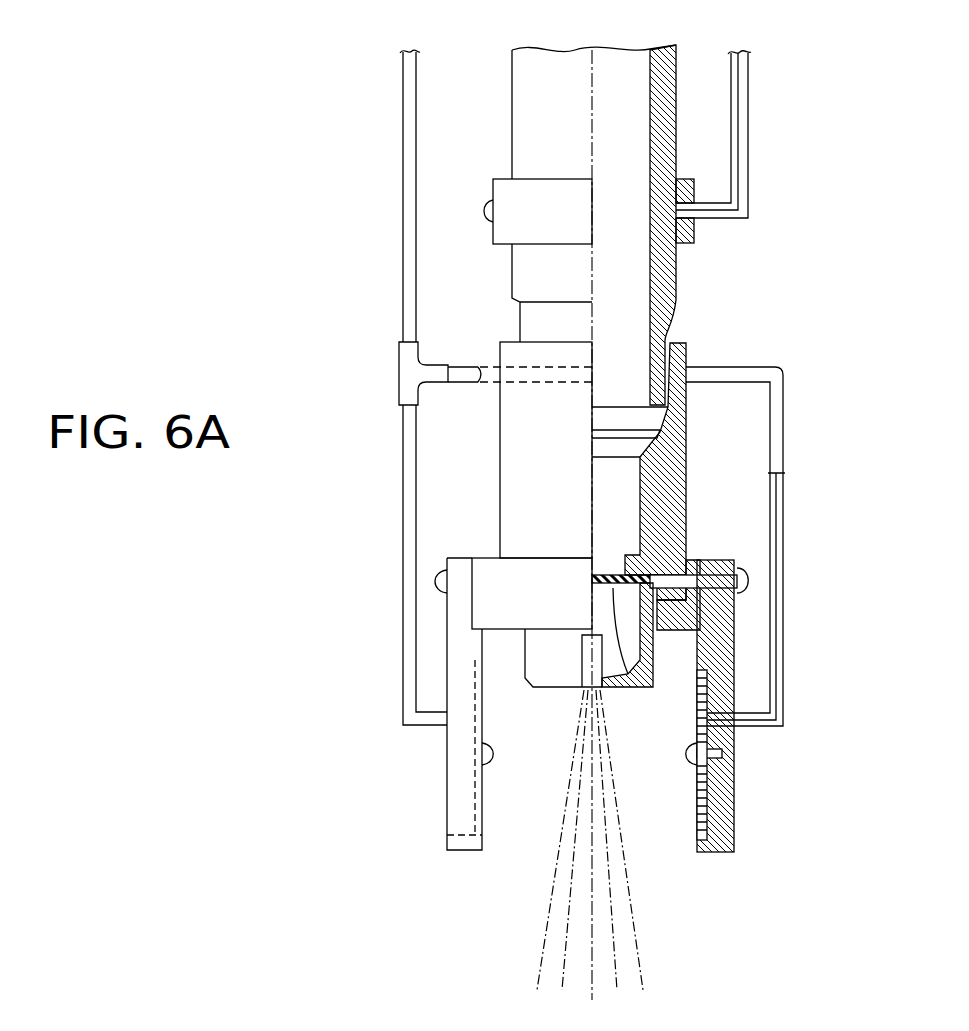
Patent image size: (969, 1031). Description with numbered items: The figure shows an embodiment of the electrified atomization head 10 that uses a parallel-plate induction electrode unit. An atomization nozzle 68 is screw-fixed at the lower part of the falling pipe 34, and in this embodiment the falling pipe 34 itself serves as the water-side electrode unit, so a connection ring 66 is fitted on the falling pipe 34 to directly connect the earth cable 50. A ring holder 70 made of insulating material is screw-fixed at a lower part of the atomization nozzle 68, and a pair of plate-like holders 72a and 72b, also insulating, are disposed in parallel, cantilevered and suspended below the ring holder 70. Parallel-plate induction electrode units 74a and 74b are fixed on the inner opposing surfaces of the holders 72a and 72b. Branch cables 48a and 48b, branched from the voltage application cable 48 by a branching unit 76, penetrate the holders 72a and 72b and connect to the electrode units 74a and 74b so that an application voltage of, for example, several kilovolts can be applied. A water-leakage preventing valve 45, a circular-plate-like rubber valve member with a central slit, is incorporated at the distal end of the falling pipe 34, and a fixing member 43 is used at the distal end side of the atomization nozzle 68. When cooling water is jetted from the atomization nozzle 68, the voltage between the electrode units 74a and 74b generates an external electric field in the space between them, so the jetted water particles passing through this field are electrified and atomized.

The electrified atomization head 10 is at (356, 93).
The falling pipe 34 is at (665, 148).
The fixing member 43 is at (720, 615).
The water-leakage preventing valve 45 is at (651, 690).
The voltage application cable 48 is at (403, 155).
The branch cable 48a is at (784, 560).
The branch cable 48b is at (403, 487).
The earth cable 50 is at (750, 87).
The connection ring 66 is at (510, 232).
The atomization nozzle 68 is at (618, 505).
The ring holder 70 is at (490, 607).
The plate-like holder 72a is at (735, 773).
The plate-like holder 72b is at (445, 780).
The parallel-plate induction electrode unit 74a is at (702, 815).
The parallel-plate induction electrode unit 74b is at (475, 832).
The branching unit 76 is at (413, 364).